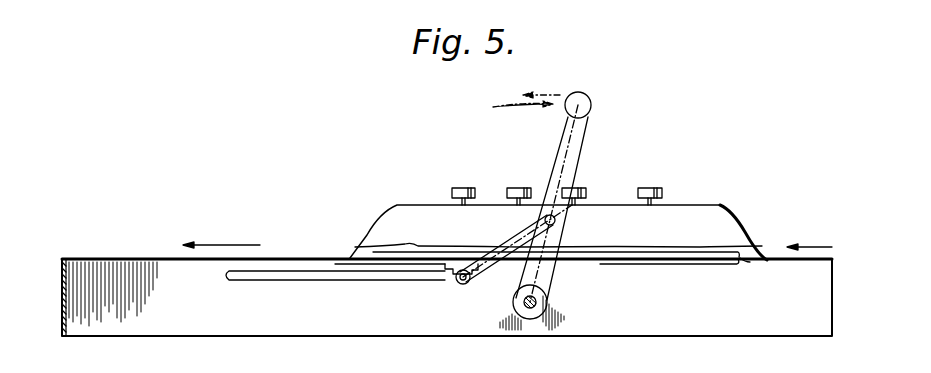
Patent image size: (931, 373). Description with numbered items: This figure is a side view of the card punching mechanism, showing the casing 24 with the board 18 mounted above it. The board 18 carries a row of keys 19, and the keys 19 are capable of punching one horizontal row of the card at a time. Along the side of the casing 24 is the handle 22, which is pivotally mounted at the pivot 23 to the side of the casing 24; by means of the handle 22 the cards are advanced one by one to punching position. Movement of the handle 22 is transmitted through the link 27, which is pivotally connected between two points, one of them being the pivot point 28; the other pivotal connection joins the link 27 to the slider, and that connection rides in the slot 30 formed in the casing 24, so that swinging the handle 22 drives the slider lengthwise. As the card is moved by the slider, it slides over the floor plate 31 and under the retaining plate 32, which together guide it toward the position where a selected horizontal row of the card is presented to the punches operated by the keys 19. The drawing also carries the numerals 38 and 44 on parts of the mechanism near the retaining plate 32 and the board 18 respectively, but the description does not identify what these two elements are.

The board 18 is at (712, 205).
The keys 19 is at (467, 187).
The handle 22 is at (540, 273).
The pivot 23 is at (535, 312).
The casing 24 is at (634, 320).
The link 27 is at (507, 242).
The pivot point 28 is at (570, 150).
The slot 30 is at (407, 283).
The floor plate 31 is at (170, 263).
The retaining plate 32 is at (732, 258).
The plate 38 is at (698, 261).
The knob 44 is at (657, 188).